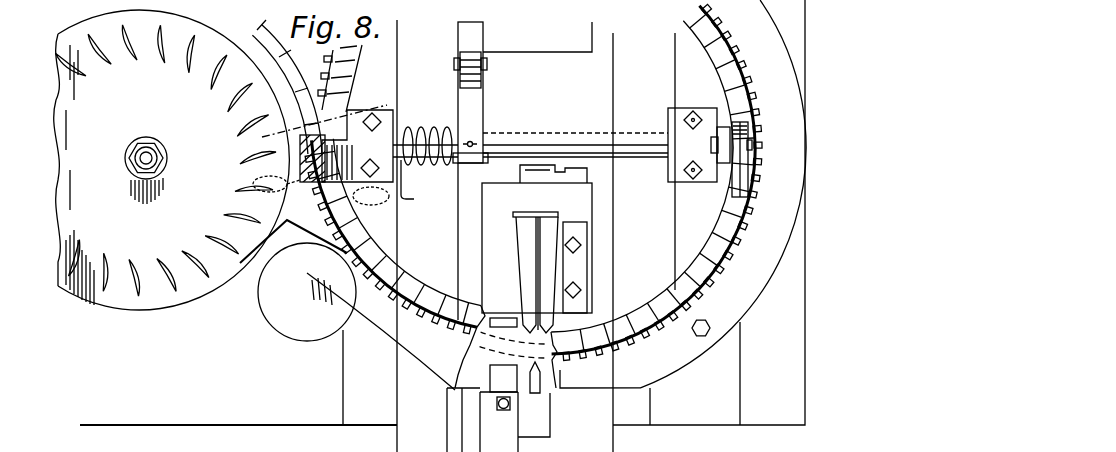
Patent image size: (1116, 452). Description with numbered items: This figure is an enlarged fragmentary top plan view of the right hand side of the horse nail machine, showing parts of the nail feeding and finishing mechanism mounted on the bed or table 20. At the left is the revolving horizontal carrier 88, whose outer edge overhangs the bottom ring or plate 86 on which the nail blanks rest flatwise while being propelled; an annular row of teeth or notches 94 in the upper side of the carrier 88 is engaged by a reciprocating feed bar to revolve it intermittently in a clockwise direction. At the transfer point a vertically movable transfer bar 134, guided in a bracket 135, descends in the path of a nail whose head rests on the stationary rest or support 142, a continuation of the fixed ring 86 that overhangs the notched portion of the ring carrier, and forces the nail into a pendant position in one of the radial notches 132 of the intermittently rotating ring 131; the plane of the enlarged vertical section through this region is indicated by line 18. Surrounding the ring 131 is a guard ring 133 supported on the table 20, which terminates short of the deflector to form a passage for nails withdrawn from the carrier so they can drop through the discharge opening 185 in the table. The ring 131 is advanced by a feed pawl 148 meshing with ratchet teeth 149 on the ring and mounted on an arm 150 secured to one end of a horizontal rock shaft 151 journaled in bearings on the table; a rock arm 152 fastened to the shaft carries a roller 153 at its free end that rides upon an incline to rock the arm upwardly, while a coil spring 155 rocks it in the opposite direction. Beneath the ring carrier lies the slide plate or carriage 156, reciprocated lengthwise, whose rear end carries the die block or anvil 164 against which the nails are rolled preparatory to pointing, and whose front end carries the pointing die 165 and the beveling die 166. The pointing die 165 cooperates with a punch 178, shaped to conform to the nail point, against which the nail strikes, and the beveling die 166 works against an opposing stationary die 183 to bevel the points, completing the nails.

The section line 18- 18 is at (328, 115).
The bed or table 20 is at (238, 409).
The bottom ring or plate 86 is at (262, 37).
The revolving horizontal carrier 88 is at (172, 160).
The teeth or notches 94 is at (220, 42).
The intermittently rotating ring 131 is at (655, 337).
The radial notches 132 is at (452, 345).
The guard ring 133 is at (742, 300).
The transfer bar 134 is at (300, 157).
The bracket 135 is at (338, 140).
The stationary rest or support 142 is at (321, 190).
The feed pawl 148 is at (745, 192).
The ratchet teeth 149 is at (710, 248).
The arm 150 is at (722, 122).
The horizontal rock shaft 151 is at (560, 136).
The rock arm 152 is at (484, 103).
The roller 153 is at (476, 56).
The coil spring 155 is at (418, 126).
The slide plate or carriage 156 is at (537, 53).
The die block or anvil 164 is at (336, 207).
The pointing die 165 is at (548, 331).
The beveling die 166 is at (502, 316).
The punch 178 is at (540, 378).
The stationary die 183 is at (470, 381).
The discharge opening 185 is at (307, 292).